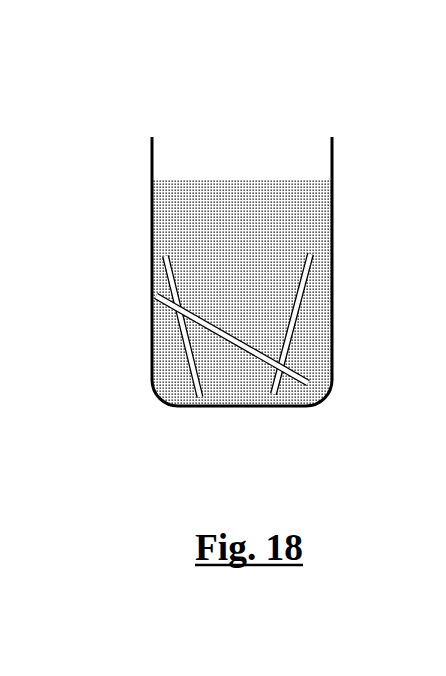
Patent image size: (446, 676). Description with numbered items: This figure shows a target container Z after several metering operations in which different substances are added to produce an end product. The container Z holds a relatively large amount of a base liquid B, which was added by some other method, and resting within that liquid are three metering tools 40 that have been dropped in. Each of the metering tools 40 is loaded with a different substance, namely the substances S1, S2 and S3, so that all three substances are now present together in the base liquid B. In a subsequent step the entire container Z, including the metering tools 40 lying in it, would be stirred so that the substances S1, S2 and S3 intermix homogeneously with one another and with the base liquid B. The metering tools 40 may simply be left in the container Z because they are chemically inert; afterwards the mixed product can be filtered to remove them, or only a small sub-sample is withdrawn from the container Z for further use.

The metering tools 40 is at (278, 355).
The substance S1 is at (210, 397).
The substance S2 is at (283, 392).
The substance S3 is at (315, 377).
The base liquid B is at (163, 330).
The target container Z is at (334, 160).